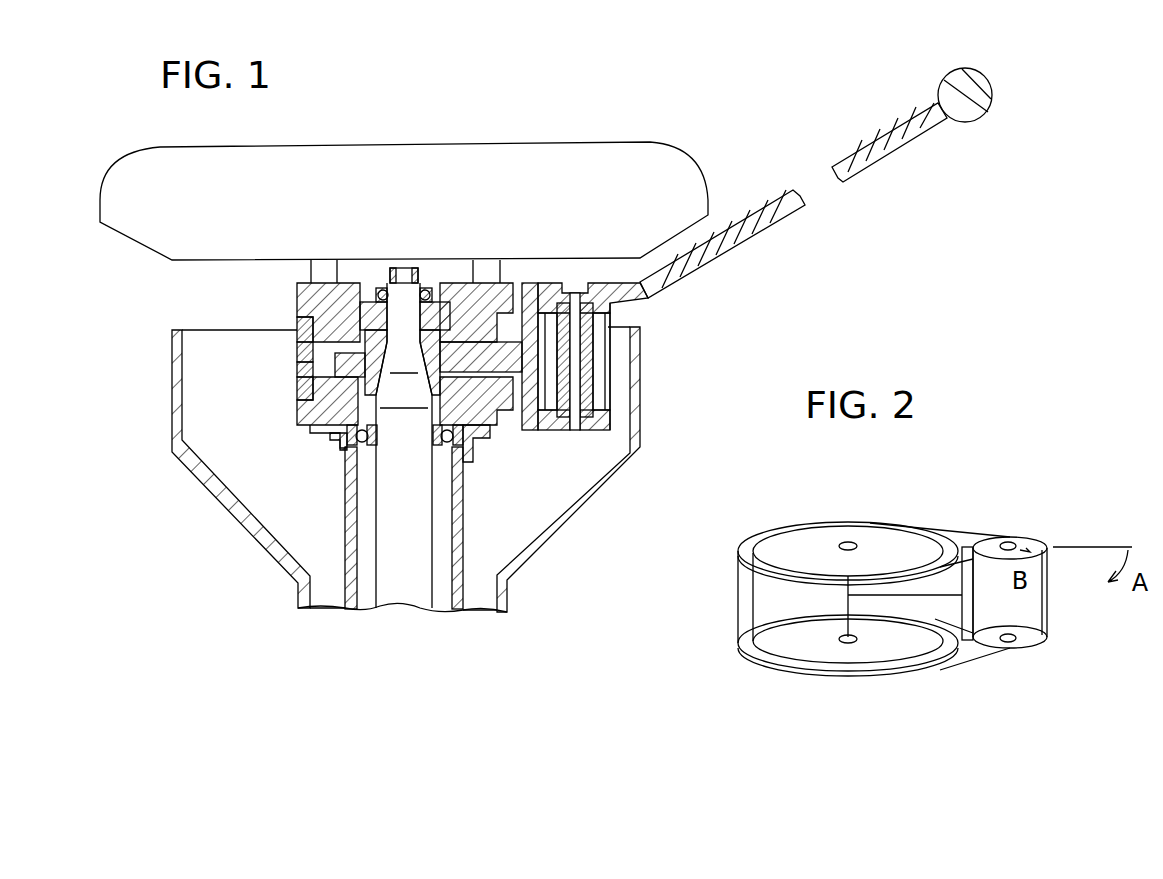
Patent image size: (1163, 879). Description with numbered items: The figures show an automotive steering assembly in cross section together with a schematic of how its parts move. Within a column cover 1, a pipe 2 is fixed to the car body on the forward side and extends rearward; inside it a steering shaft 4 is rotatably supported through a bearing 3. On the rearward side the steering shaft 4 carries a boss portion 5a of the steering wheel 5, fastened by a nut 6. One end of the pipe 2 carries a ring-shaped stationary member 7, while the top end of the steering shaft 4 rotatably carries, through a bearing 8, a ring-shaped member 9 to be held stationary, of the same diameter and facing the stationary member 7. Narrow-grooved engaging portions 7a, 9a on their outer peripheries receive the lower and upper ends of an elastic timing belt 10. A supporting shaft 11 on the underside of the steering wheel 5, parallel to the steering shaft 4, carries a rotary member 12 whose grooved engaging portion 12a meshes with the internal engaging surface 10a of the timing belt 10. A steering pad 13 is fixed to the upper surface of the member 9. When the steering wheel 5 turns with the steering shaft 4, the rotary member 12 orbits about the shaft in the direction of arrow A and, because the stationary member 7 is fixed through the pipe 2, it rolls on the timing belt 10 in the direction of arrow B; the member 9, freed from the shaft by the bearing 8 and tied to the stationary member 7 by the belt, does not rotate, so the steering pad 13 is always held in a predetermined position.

In FIG. 1, the column cover 1 is at (172, 406).
In FIG. 1, the pipe 2 is at (350, 516).
In FIG. 1, the bearing 3 is at (338, 440).
In FIG. 1, the steering shaft 4 is at (402, 600).
In FIG. 1, the steering wheel 5 is at (890, 143).
In FIG. 1, the boss portion 5a is at (483, 370).
In FIG. 1, the nut 6 is at (445, 295).
In FIG. 1, the stationary member 7 is at (297, 421).
In FIG. 2, the stationary member 7 is at (817, 648).
In FIG. 1, the engaging portion 7a is at (297, 402).
In FIG. 2, the engaging portion 7a is at (860, 670).
In FIG. 1, the bearing 8 is at (390, 283).
In FIG. 1, the member to be held stationary 9 is at (305, 292).
In FIG. 2, the member to be held stationary 9 is at (817, 546).
In FIG. 1, the engaging portion 9a is at (302, 323).
In FIG. 2, the engaging portion 9a is at (777, 535).
In FIG. 1, the timing belt 10 is at (303, 351).
In FIG. 2, the timing belt 10 is at (745, 595).
In FIG. 1, the internal engaging surface 10a is at (305, 379).
In FIG. 2, the internal engaging surface 10a is at (955, 545).
In FIG. 1, the supporting shaft 11 is at (575, 400).
In FIG. 2, the rotary member 12 is at (1045, 537).
In FIG. 1, the engaging portion 12a is at (556, 385).
In FIG. 2, the engaging portion 12a is at (983, 542).
In FIG. 1, the steering pad 13 is at (388, 158).